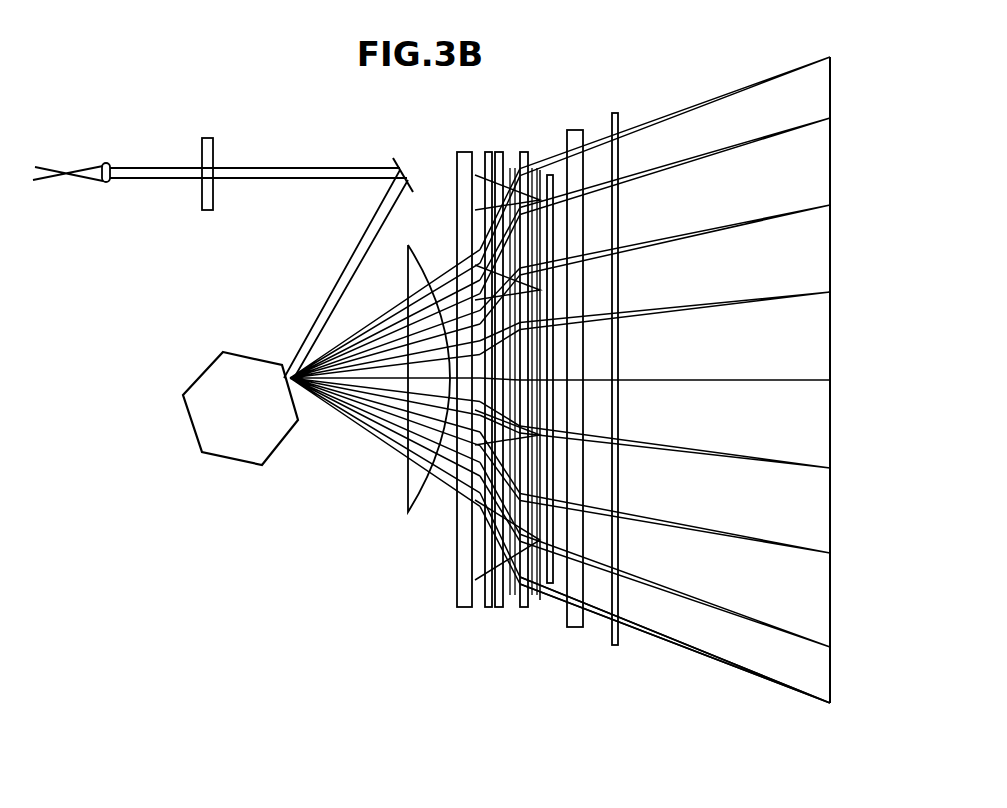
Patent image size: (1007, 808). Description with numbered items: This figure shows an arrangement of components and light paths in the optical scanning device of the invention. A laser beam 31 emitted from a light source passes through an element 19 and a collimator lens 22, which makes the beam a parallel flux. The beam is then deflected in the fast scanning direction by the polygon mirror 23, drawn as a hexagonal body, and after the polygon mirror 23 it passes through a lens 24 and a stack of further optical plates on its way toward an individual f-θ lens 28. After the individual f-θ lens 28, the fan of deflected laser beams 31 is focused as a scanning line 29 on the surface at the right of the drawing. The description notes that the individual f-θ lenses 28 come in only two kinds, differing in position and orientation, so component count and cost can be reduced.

The polarizer plate 19 is at (208, 137).
The collimator lens 22 is at (105, 162).
The polygon mirror 23 is at (210, 362).
The scanning lens 24 is at (408, 493).
The individual f-θ lens 28 is at (575, 630).
The scanning line 29 is at (838, 250).
The laser beam 31 is at (700, 658).